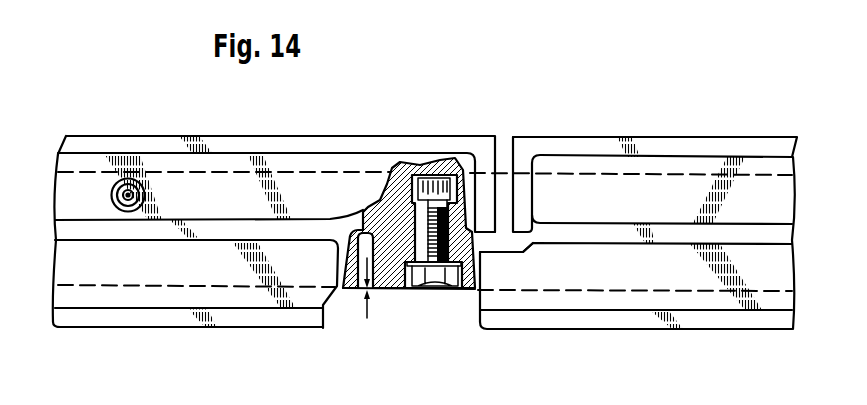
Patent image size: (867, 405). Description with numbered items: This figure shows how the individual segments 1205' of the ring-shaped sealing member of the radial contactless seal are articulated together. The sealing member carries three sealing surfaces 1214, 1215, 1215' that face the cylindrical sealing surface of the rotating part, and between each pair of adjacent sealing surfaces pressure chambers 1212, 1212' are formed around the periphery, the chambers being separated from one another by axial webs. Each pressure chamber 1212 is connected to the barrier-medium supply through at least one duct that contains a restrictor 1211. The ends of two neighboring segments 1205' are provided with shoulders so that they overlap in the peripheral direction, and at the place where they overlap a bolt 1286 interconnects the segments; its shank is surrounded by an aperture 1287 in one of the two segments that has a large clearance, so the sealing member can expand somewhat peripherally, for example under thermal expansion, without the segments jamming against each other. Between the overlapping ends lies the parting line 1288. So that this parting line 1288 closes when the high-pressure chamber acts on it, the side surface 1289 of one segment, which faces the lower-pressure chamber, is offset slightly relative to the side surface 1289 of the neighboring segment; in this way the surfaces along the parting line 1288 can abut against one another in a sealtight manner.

The sealing surface 1214 is at (83, 143).
The segment 1205' is at (428, 108).
The bolt 1286 is at (453, 174).
The restrictor 1211 is at (145, 194).
The pressure chamber 1212 is at (198, 196).
The pressure chamber 1212' is at (456, 217).
The sealing surface 1215 is at (433, 272).
The sealing surface 1215' is at (417, 345).
The aperture 1287 is at (427, 290).
The parting line 1288 is at (479, 234).
The side surface 1289 is at (340, 289).